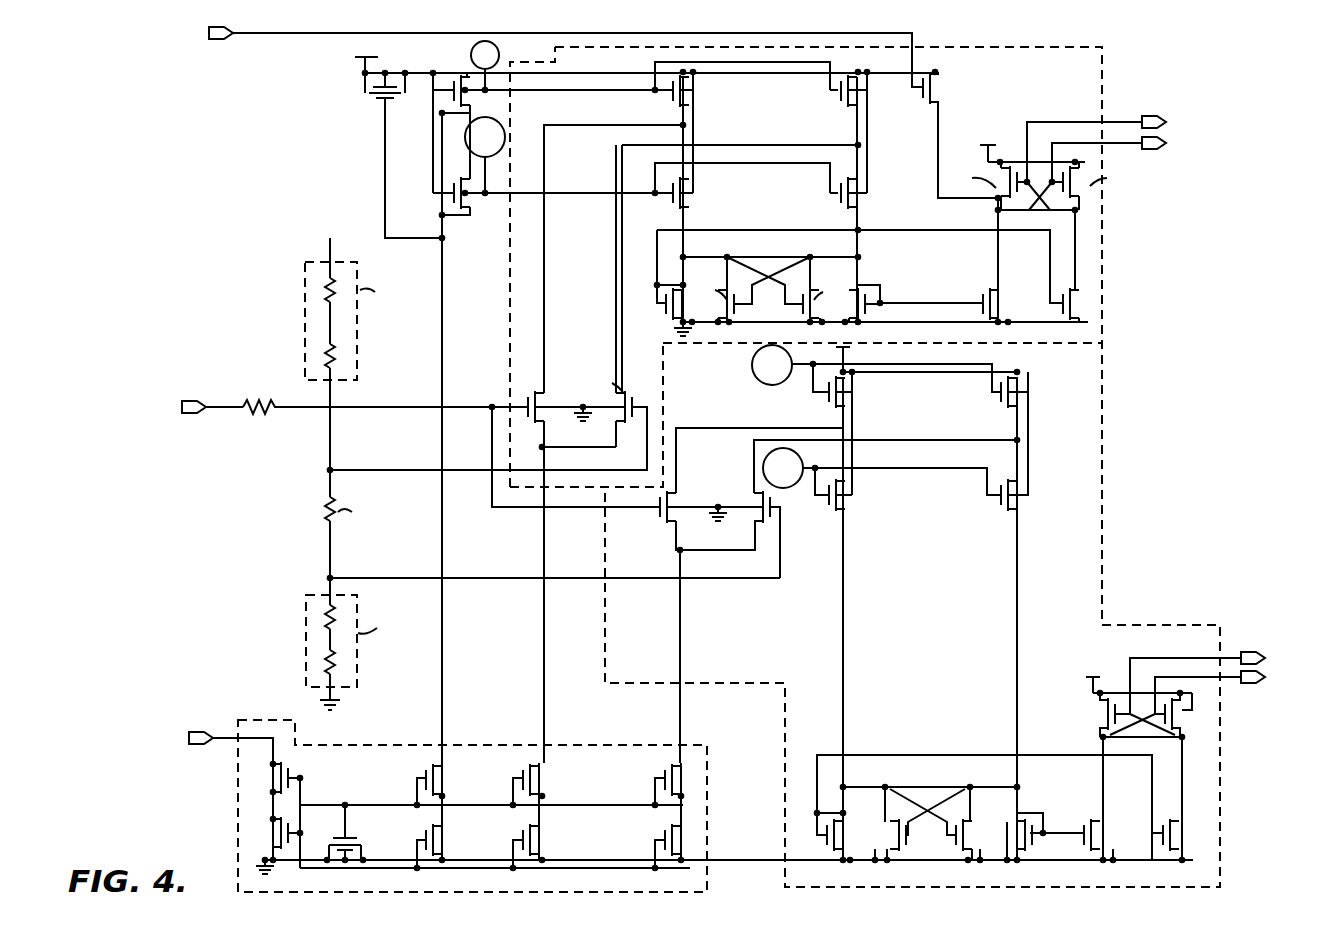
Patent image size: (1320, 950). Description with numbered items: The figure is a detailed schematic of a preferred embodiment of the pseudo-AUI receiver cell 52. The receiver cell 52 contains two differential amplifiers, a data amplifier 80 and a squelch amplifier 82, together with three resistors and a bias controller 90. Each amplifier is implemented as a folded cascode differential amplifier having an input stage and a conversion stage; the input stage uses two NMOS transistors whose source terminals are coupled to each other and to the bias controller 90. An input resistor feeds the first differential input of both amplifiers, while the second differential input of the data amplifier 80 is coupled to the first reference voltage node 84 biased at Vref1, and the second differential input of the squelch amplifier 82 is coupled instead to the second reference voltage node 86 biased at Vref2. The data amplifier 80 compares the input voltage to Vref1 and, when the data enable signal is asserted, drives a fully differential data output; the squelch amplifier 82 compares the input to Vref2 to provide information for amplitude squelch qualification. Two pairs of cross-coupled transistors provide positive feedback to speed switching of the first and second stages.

The receiver cell 52 is at (206, 180).
The data amplifier 80 is at (510, 324).
The squelch amplifier 82 is at (1102, 482).
The first reference voltage node 84 is at (327, 470).
The second reference voltage node 86 is at (327, 578).
The bias controller 90 is at (466, 745).